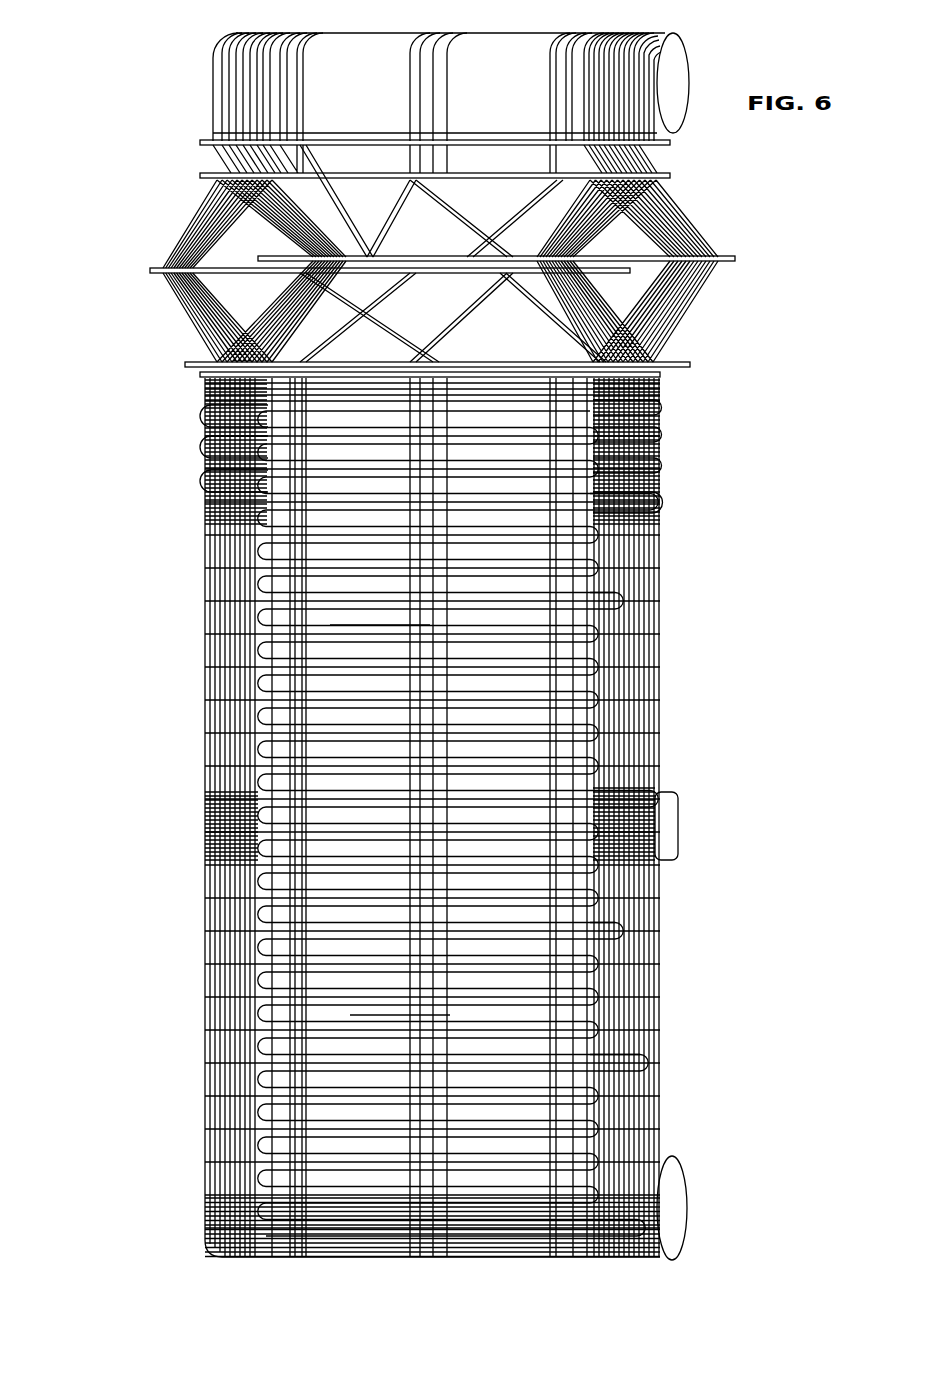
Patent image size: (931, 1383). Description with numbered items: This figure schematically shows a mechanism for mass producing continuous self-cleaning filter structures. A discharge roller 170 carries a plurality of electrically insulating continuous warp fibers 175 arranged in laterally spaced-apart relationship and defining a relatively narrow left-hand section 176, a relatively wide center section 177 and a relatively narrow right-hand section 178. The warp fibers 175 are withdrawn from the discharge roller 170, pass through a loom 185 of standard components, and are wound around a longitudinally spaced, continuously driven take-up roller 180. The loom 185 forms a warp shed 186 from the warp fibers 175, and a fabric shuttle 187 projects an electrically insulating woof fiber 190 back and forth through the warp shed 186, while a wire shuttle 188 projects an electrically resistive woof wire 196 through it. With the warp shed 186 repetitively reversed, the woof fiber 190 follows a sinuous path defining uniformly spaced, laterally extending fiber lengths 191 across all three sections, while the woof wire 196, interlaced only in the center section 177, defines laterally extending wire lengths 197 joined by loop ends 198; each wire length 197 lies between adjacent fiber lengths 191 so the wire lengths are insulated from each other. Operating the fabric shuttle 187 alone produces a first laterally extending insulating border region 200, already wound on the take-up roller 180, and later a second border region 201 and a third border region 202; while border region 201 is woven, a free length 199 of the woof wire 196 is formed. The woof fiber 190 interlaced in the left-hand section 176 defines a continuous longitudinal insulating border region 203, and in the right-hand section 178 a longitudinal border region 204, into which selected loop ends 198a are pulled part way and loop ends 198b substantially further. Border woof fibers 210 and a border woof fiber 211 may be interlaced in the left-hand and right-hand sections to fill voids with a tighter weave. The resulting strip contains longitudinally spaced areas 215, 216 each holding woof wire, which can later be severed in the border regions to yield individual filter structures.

The discharge roller 170 is at (690, 55).
The warp fibers 175 is at (410, 72).
The left-hand section 176 is at (261, 20).
The center section 177 is at (460, 3).
The right-hand section 178 is at (662, 3).
The take-up roller 180 is at (683, 1183).
The loom 185 is at (792, 182).
The warp shed 186 is at (635, 243).
The fabric shuttle 187 is at (706, 328).
The wire shuttle 188 is at (170, 310).
The woof fiber 190 is at (201, 471).
The fiber lengths 191 is at (235, 500).
The woof wire 196 is at (465, 404).
The wire lengths 197 is at (330, 406).
The loop ends 198 is at (590, 666).
The loop ends 198a is at (600, 603).
The loop ends 198b is at (632, 500).
The free length 199 is at (679, 818).
The insulating border region 200 is at (218, 591).
The insulating border region 201 is at (326, 835).
The insulating border region 202 is at (228, 391).
The insulating border region 203 is at (240, 817).
The insulating border region 204 is at (660, 430).
The border woof fibers 210 is at (218, 444).
The border woof fiber 211 is at (656, 468).
The area 215 is at (350, 1015).
The area 216 is at (330, 625).